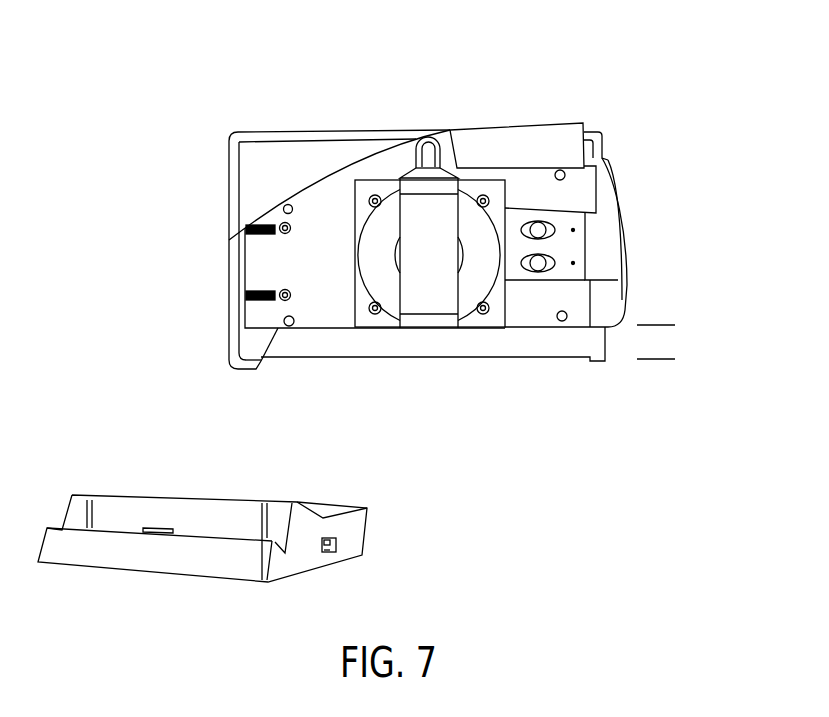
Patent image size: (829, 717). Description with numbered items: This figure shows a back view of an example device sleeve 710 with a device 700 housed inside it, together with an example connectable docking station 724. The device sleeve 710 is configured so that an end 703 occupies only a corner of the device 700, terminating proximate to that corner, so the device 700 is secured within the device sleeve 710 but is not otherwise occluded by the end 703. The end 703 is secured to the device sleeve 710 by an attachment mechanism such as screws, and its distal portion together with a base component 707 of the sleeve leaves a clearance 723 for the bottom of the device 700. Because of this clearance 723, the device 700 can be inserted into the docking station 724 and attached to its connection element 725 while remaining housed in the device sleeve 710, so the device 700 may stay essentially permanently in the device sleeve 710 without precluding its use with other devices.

The device 700 is at (253, 167).
The end 703 is at (248, 343).
The base component 707 is at (302, 253).
The device sleeve 710 is at (535, 112).
The clearance 723 is at (688, 323).
The docking station 724 is at (142, 495).
The connection element 725 is at (157, 530).